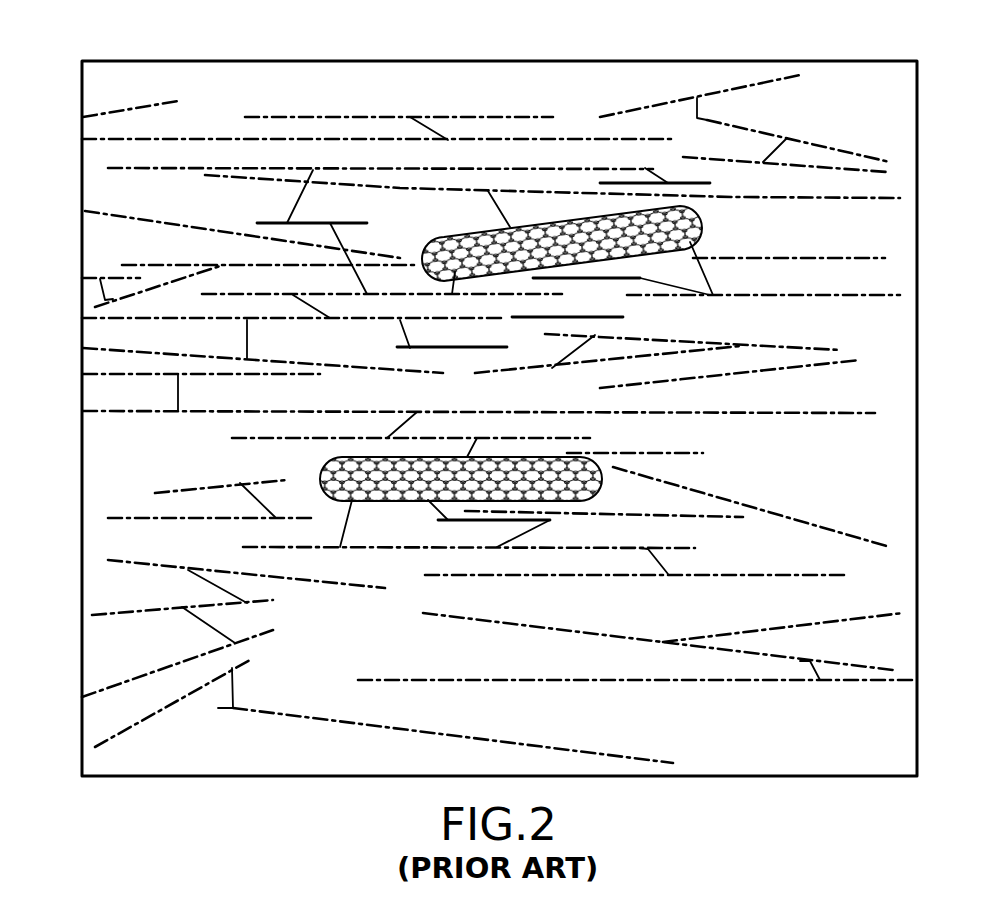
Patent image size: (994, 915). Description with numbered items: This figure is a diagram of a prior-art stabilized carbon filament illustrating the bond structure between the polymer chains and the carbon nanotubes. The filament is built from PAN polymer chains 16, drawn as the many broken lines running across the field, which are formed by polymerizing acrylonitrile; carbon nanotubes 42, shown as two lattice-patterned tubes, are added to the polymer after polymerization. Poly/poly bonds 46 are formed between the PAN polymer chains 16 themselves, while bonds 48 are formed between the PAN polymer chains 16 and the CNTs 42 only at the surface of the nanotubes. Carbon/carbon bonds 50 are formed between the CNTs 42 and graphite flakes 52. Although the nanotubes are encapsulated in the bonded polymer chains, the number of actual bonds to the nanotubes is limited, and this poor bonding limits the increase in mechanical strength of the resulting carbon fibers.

The PAN polymer 16 is at (222, 145).
The carbon nanotubes 42 is at (565, 195).
The poly/poly bonds 46 is at (253, 502).
The bonds 48 is at (700, 223).
The carbon/carbon bonds 50 is at (447, 520).
The graphite flakes 52 is at (470, 540).